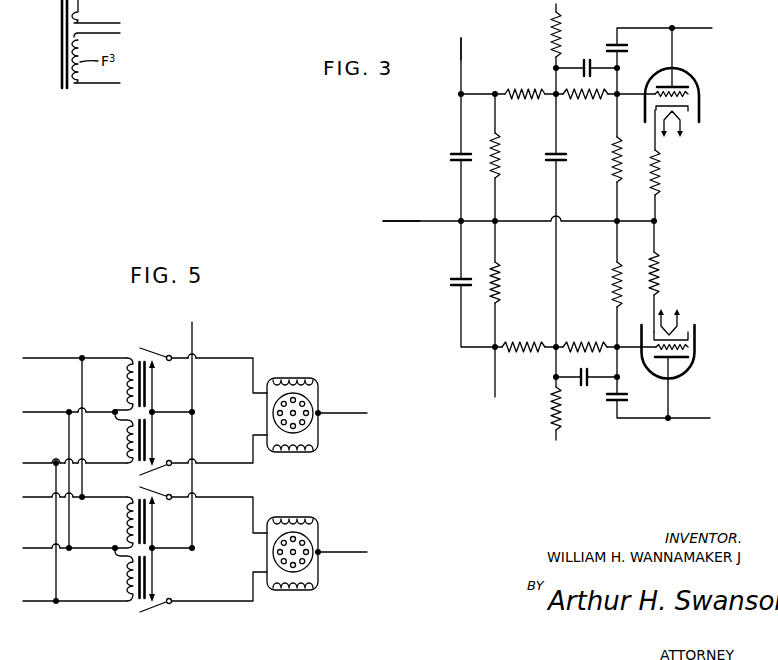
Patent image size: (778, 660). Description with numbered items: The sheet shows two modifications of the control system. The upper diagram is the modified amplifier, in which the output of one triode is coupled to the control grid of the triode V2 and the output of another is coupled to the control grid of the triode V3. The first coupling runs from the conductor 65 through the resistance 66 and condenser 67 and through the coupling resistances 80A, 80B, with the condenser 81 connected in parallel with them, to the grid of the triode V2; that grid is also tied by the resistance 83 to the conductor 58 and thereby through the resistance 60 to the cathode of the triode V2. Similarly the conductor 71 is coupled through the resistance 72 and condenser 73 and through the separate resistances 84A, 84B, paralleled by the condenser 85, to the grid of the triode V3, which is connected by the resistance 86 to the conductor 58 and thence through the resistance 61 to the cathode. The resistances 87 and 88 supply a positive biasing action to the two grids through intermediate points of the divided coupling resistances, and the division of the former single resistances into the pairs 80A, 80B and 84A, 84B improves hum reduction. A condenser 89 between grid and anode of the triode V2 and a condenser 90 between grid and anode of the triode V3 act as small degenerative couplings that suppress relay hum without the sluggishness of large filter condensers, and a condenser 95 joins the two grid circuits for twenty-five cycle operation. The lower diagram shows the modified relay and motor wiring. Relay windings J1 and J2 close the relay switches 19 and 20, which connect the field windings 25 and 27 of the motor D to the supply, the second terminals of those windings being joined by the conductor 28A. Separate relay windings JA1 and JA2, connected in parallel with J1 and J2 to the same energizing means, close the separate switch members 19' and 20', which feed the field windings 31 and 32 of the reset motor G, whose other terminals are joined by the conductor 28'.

In FIG. 3, the conductor 65 is at (459, 61).
In FIG. 3, the conductor 58 is at (413, 221).
In FIG. 3, the conductor 71 is at (492, 368).
In FIG. 3, the condenser 67 is at (449, 158).
In FIG. 3, the condenser 73 is at (450, 282).
In FIG. 3, the condenser 95 is at (545, 159).
In FIG. 3, the condenser 89 is at (628, 48).
In FIG. 3, the condenser 90 is at (628, 397).
In FIG. 3, the condenser 81 is at (589, 58).
In FIG. 3, the condenser 85 is at (584, 388).
In FIG. 3, the resistance 87 is at (550, 38).
In FIG. 3, the resistance 66 is at (499, 149).
In FIG. 3, the resistance 83 is at (613, 158).
In FIG. 3, the resistance 60 is at (660, 168).
In FIG. 3, the resistance 72 is at (500, 281).
In FIG. 3, the resistance 86 is at (612, 282).
In FIG. 3, the resistance 61 is at (659, 272).
In FIG. 3, the resistance 88 is at (551, 415).
In FIG. 3, the resistance 80B is at (514, 100).
In FIG. 3, the resistance 80A is at (599, 100).
In FIG. 3, the resistance 84B is at (534, 340).
In FIG. 3, the resistance 84A is at (598, 340).
In FIG. 3, the triode V2 is at (688, 78).
In FIG. 3, the triode V3 is at (687, 369).
In FIG. 5, the relay winding J1 is at (124, 392).
In FIG. 5, the relay winding J2 is at (124, 444).
In FIG. 5, the relay winding JA1 is at (124, 528).
In FIG. 5, the relay winding JA2 is at (124, 585).
In FIG. 5, the relay switch 19 is at (158, 345).
In FIG. 5, the relay switch 20 is at (162, 477).
In FIG. 5, the relay switch member 19' is at (162, 506).
In FIG. 5, the relay switch member 20' is at (162, 620).
In FIG. 5, the motor D is at (279, 416).
In FIG. 5, the reset motor G is at (276, 555).
In FIG. 5, the field winding 25 is at (298, 377).
In FIG. 5, the field winding 27 is at (296, 452).
In FIG. 5, the field winding 31 is at (298, 516).
In FIG. 5, the field winding 32 is at (296, 590).
In FIG. 5, the conductor 28A is at (340, 413).
In FIG. 5, the conductor 28' is at (341, 543).